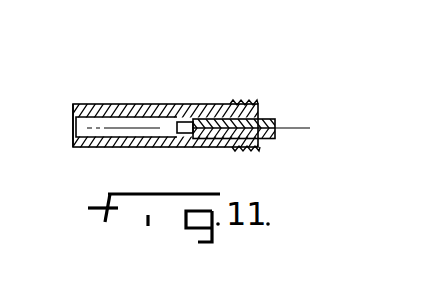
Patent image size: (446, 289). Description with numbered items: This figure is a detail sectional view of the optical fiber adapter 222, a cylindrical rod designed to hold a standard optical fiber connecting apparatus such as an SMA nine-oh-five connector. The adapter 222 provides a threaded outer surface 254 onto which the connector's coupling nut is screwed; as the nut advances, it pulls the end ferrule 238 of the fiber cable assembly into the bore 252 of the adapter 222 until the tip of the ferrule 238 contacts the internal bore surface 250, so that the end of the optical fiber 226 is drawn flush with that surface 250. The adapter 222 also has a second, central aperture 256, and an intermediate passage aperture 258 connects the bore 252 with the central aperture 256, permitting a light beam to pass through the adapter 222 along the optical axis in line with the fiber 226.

The optical fiber adapter 222 is at (122, 103).
The optical fiber 226 is at (298, 128).
The end ferrule 238 is at (268, 145).
The internal bore surface 250 is at (230, 104).
The bore 252 is at (226, 146).
The threaded outer surface 254 is at (252, 104).
The central aperture 256 is at (76, 135).
The intermediate passage aperture 258 is at (200, 85).